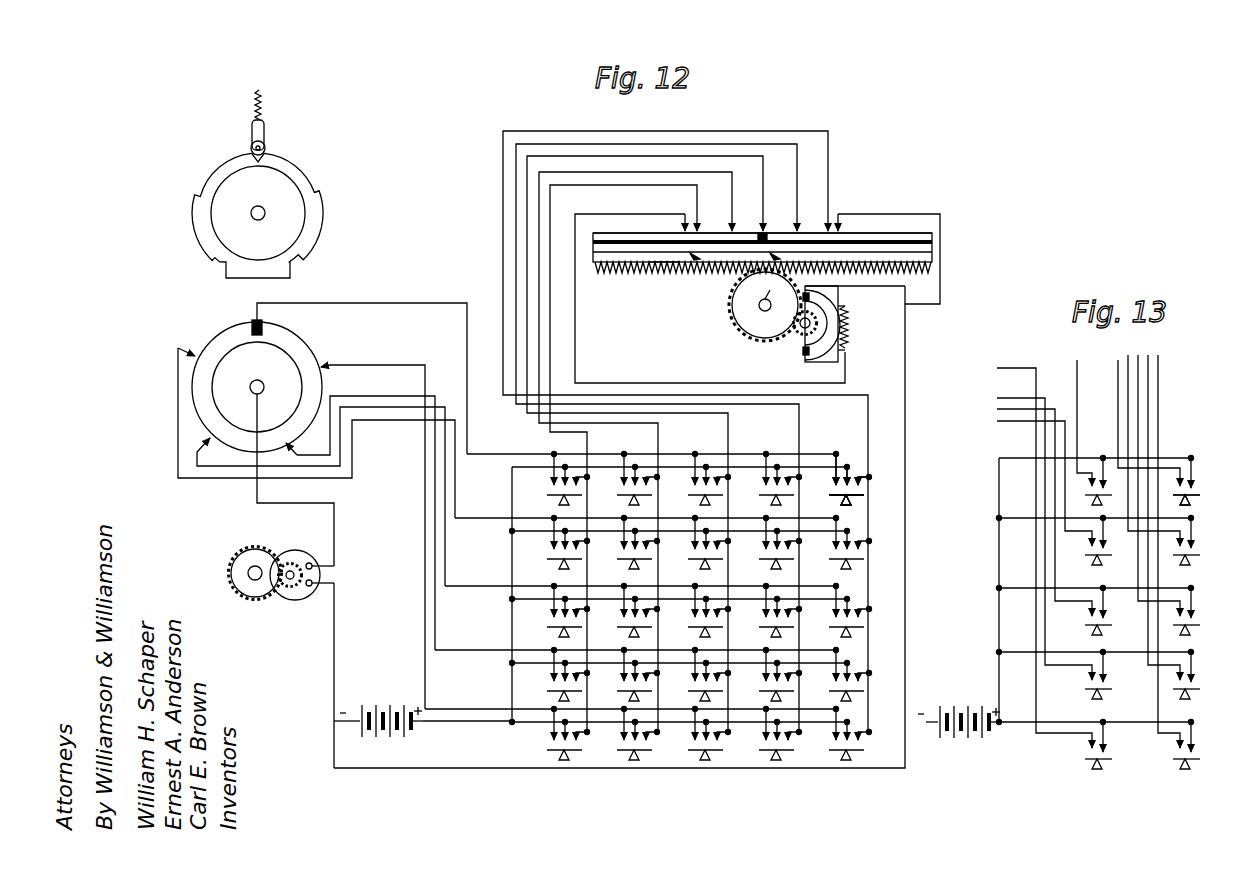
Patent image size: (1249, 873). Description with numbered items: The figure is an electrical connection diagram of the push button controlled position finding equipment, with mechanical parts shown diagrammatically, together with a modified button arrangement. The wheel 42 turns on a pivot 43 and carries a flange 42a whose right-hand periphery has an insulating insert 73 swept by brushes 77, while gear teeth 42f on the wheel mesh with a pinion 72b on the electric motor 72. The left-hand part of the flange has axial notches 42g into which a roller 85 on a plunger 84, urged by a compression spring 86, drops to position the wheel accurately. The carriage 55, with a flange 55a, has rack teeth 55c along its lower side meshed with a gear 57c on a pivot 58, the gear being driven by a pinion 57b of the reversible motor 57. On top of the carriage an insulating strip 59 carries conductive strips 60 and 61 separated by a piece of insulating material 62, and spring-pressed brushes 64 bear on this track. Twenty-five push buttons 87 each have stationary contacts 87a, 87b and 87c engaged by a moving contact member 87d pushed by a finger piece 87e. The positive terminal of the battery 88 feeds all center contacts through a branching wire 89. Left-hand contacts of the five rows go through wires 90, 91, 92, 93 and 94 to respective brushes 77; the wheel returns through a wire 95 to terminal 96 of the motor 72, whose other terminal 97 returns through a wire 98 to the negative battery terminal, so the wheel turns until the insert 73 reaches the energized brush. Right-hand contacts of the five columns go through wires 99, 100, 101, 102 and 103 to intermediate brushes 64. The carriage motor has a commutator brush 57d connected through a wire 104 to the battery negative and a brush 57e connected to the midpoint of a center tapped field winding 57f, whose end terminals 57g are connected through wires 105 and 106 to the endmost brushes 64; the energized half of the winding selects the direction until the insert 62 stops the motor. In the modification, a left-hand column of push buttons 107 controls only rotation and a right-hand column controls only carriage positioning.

In FIG. 12, the wheel 42 is at (196, 400).
In FIG. 12, the flange 42a is at (300, 172).
In FIG. 12, the gear teeth 42f is at (247, 549).
In FIG. 12, the axial notches 42g is at (318, 195).
In FIG. 12, the pivot 43 is at (257, 216).
In FIG. 12, the carriage 55 is at (935, 255).
In FIG. 12, the carriage flange 55a is at (738, 264).
In FIG. 12, the rack teeth 55c is at (662, 272).
In FIG. 12, the electric motor 57 is at (782, 343).
In FIG. 12, the pinion 57b is at (798, 344).
In FIG. 12, the gear 57c is at (731, 313).
In FIG. 12, the commutator brush 57d is at (812, 297).
In FIG. 12, the commutator brush 57e is at (806, 360).
In FIG. 12, the center tapped field winding 57f is at (851, 334).
In FIG. 12, the end terminals 57g is at (849, 309).
In FIG. 12, the pivot 58 is at (758, 296).
In FIG. 12, the strip of electrical insulating material 59 is at (930, 238).
In FIG. 12, the electrical conductive strip 60 is at (652, 240).
In FIG. 12, the electrical conductive strip 61 is at (860, 241).
In FIG. 12, the piece of insulating material 62 is at (761, 231).
In FIG. 12, the electrical brush 64 is at (731, 230).
In FIG. 12, the electric motor 72 is at (291, 588).
In FIG. 12, the pinion 72b is at (290, 562).
In FIG. 12, the insert of insulating material 73 is at (252, 327).
In FIG. 12, the electrical brush 77 is at (192, 356).
In FIG. 12, the plunger 84 is at (266, 128).
In FIG. 12, the roller 85 is at (252, 146).
In FIG. 12, the compression spring 86 is at (255, 101).
In FIG. 12, the electrical push button 87 is at (700, 496).
In FIG. 12, the stationary contact 87a is at (836, 484).
In FIG. 12, the stationary contact 87b is at (858, 473).
In FIG. 12, the stationary contact 87c is at (862, 480).
In FIG. 12, the moving electrical contact member 87d is at (862, 497).
In FIG. 12, the finger piece 87e is at (845, 497).
In FIG. 12, the battery 88 is at (391, 708).
In FIG. 13, the battery 88 is at (972, 707).
In FIG. 12, the branching wire 89 is at (468, 724).
In FIG. 13, the branching wire 89 is at (988, 730).
In FIG. 12, the wire 90 is at (504, 457).
In FIG. 12, the wire 91 is at (497, 521).
In FIG. 13, the wire 91 is at (1020, 428).
In FIG. 12, the wire 92 is at (490, 589).
In FIG. 13, the wire 92 is at (1005, 409).
In FIG. 12, the wire 93 is at (483, 652).
In FIG. 13, the wire 93 is at (1022, 398).
In FIG. 12, the wire 94 is at (493, 710).
In FIG. 13, the wire 94 is at (1030, 356).
In FIG. 12, the wire 95 is at (334, 520).
In FIG. 13, the wire 95 is at (1078, 372).
In FIG. 12, the terminal 96 is at (310, 562).
In FIG. 12, the terminal 97 is at (314, 582).
In FIG. 12, the wire 98 is at (334, 655).
In FIG. 12, the wire 99 is at (503, 204).
In FIG. 13, the wire 99 is at (1118, 411).
In FIG. 12, the wire 100 is at (516, 232).
In FIG. 13, the wire 100 is at (1130, 360).
In FIG. 12, the wire 101 is at (527, 258).
In FIG. 13, the wire 101 is at (1140, 376).
In FIG. 12, the wire 102 is at (539, 285).
In FIG. 13, the wire 102 is at (1150, 394).
In FIG. 12, the wire 103 is at (550, 312).
In FIG. 13, the wire 103 is at (1160, 407).
In FIG. 12, the wire 104 is at (906, 552).
In FIG. 12, the wire 105 is at (942, 287).
In FIG. 12, the wire 106 is at (575, 334).
In FIG. 13, the push button 107 is at (1194, 506).